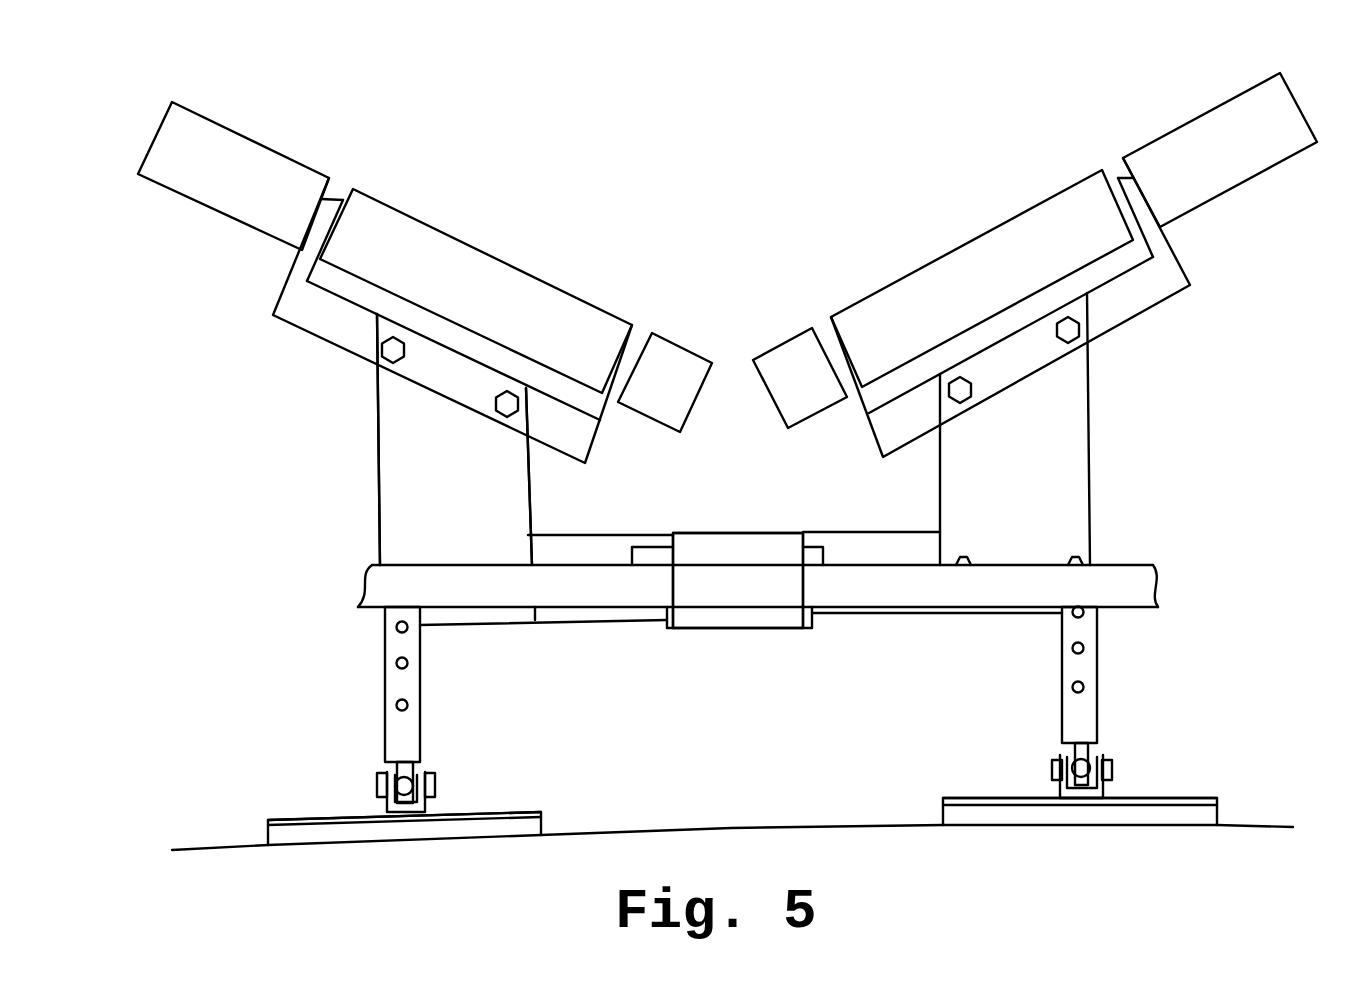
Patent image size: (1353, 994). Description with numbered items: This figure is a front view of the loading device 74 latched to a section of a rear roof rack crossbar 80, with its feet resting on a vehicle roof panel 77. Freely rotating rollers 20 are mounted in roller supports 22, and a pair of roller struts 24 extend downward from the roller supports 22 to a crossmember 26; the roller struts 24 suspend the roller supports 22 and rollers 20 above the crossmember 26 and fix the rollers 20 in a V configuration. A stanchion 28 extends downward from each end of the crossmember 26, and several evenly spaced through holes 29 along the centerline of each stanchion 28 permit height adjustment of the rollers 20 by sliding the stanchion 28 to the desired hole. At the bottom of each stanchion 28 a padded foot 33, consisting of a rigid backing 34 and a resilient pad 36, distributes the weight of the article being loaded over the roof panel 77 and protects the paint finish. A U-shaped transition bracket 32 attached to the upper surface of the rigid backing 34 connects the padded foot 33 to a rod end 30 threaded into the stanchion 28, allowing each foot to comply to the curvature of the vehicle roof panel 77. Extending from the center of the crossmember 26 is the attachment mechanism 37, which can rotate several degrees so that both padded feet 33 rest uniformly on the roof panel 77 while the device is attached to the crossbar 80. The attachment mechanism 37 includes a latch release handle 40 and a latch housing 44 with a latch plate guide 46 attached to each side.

The rollers 20 is at (237, 133).
The roller support 22 is at (283, 296).
The roller struts 24 is at (377, 435).
The crossmember 26 is at (580, 535).
The stanchion 28 is at (385, 692).
The through holes 29 is at (408, 703).
The rod end 30 is at (410, 778).
The transition bracket 32 is at (385, 790).
The padded foot 33 is at (281, 810).
The rigid backing 34 is at (530, 810).
The resilient pad 36 is at (542, 830).
The attachment mechanism 37 is at (775, 566).
The latch release handle 40 is at (823, 550).
The latch housing 44 is at (775, 593).
The latch plate guide 46 is at (810, 628).
The loading device 74 is at (370, 495).
The vehicle roof panel 77 is at (222, 850).
The rear roof rack crossbar 80 is at (361, 582).